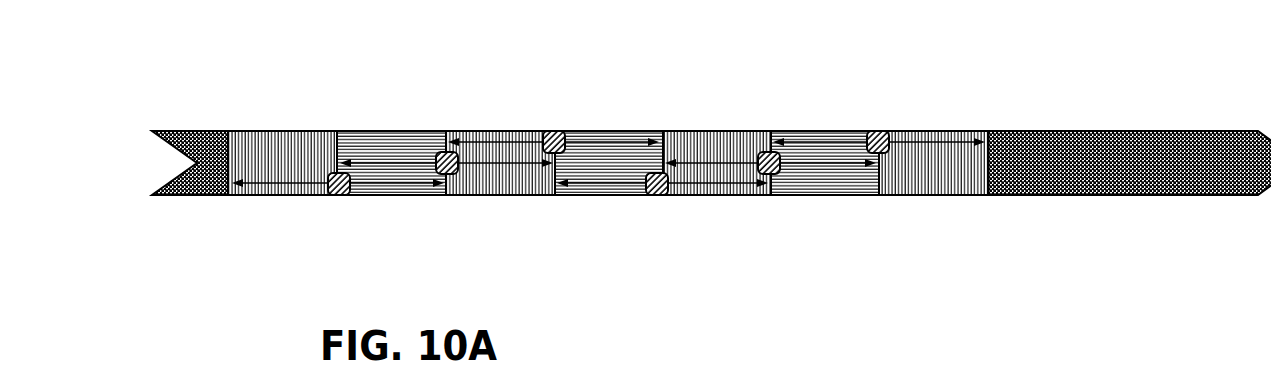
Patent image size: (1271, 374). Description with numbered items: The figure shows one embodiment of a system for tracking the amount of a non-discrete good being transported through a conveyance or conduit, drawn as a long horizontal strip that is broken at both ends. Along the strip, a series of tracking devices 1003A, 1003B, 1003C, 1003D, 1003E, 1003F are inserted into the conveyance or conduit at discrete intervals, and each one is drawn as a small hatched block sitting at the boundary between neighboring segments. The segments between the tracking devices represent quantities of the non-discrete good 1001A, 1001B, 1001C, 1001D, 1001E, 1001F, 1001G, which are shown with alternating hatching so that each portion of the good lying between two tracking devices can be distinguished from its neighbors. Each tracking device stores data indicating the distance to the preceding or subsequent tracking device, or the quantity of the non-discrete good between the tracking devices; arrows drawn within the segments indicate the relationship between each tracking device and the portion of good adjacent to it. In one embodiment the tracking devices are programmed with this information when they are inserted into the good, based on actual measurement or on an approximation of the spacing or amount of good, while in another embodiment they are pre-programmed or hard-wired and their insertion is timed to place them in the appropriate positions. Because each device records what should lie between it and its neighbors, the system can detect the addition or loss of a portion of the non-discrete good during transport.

The non-discrete good quantity 1001A is at (279, 150).
The non-discrete good quantity 1001B is at (370, 158).
The non-discrete good quantity 1001C is at (496, 158).
The non-discrete good quantity 1001D is at (606, 160).
The non-discrete good quantity 1001E is at (719, 158).
The non-discrete good quantity 1001F is at (809, 165).
The non-discrete good quantity 1001G is at (916, 155).
The tracking device 1003A is at (339, 196).
The tracking device 1003B is at (445, 176).
The tracking device 1003C is at (545, 156).
The tracking device 1003D is at (655, 196).
The tracking device 1003E is at (766, 176).
The tracking device 1003F is at (876, 156).